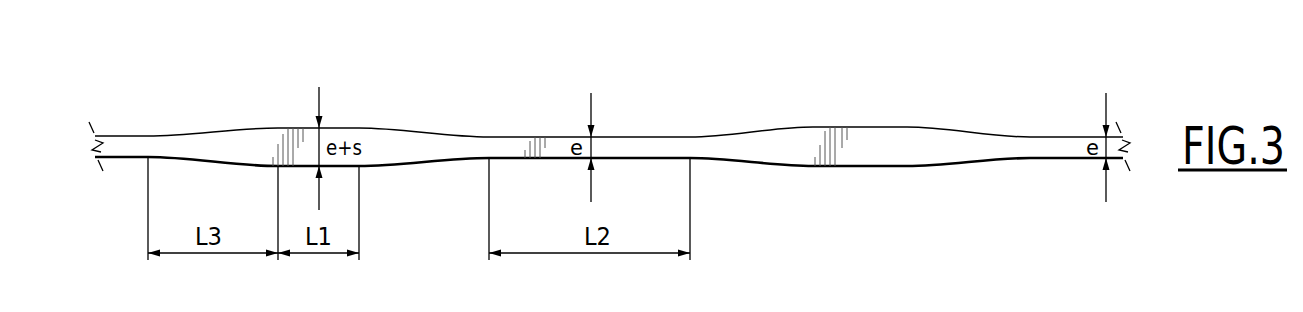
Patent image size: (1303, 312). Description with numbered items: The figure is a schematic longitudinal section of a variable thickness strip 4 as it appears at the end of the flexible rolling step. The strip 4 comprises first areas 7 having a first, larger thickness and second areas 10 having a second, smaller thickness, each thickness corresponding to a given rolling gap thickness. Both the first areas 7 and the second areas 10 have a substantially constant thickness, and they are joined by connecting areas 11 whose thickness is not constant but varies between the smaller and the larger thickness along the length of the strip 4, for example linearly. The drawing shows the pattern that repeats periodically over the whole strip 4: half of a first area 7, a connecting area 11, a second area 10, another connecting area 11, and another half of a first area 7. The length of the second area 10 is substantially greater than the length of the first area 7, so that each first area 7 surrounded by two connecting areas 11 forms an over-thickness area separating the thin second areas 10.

The variable thickness strip 4 is at (126, 94).
The first area 7 is at (332, 127).
The second area 10 is at (657, 133).
The connecting area 11 is at (222, 130).